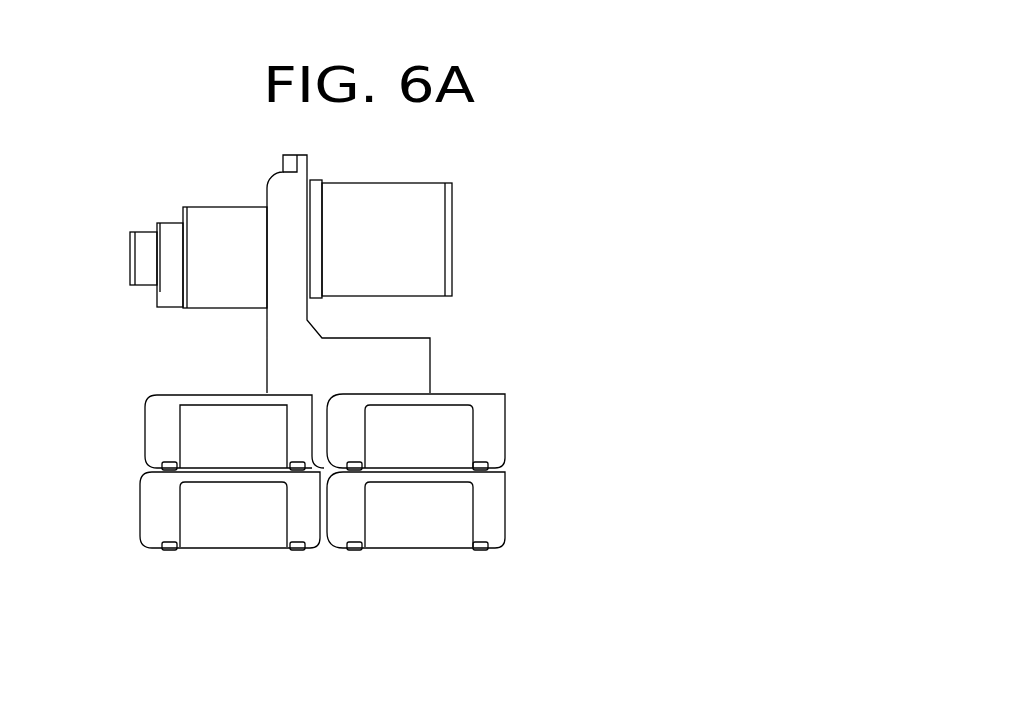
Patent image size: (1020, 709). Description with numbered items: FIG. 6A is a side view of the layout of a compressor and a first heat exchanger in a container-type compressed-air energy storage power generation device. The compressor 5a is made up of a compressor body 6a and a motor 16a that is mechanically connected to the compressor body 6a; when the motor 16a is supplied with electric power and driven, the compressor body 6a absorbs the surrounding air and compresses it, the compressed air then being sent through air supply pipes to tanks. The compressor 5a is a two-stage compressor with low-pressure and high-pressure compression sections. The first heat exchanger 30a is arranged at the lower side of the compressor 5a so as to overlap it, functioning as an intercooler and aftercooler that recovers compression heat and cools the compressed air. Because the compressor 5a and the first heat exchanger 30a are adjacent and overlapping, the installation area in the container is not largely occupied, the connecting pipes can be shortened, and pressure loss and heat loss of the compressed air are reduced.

The compressor 5a is at (398, 367).
The compressor body 6a is at (272, 197).
The motor 16a is at (423, 285).
The first heat exchanger 30a is at (467, 548).